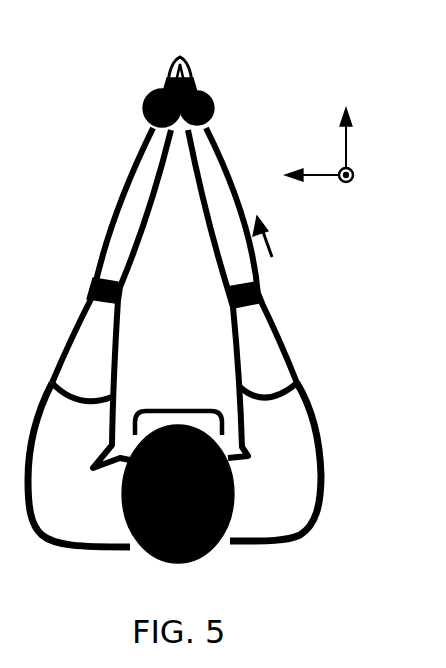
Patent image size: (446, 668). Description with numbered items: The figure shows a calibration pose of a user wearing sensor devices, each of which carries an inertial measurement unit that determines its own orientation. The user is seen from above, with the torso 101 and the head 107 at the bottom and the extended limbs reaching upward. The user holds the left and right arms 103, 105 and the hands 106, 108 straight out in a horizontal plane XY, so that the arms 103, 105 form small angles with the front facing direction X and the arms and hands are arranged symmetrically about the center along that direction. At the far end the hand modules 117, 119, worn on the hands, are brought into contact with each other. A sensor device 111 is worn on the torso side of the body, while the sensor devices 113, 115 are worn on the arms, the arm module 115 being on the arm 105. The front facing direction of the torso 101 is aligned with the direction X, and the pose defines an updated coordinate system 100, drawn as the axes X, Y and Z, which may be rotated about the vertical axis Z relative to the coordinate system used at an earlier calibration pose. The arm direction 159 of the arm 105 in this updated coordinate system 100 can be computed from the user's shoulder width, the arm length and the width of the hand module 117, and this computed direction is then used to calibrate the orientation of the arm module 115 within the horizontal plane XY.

The coordinate system 100 is at (347, 146).
The torso 101 is at (238, 543).
The upper arm 103 is at (80, 304).
The upper arm 105 is at (275, 315).
The hand 106 is at (188, 68).
The head 107 is at (235, 488).
The hand 108 is at (170, 70).
The sensor device 111 is at (162, 413).
The sensor device 113 is at (88, 285).
The arm module 115 is at (265, 293).
The hand module 117 is at (212, 105).
The hand module 119 is at (146, 98).
The direction V_A 159 is at (272, 252).